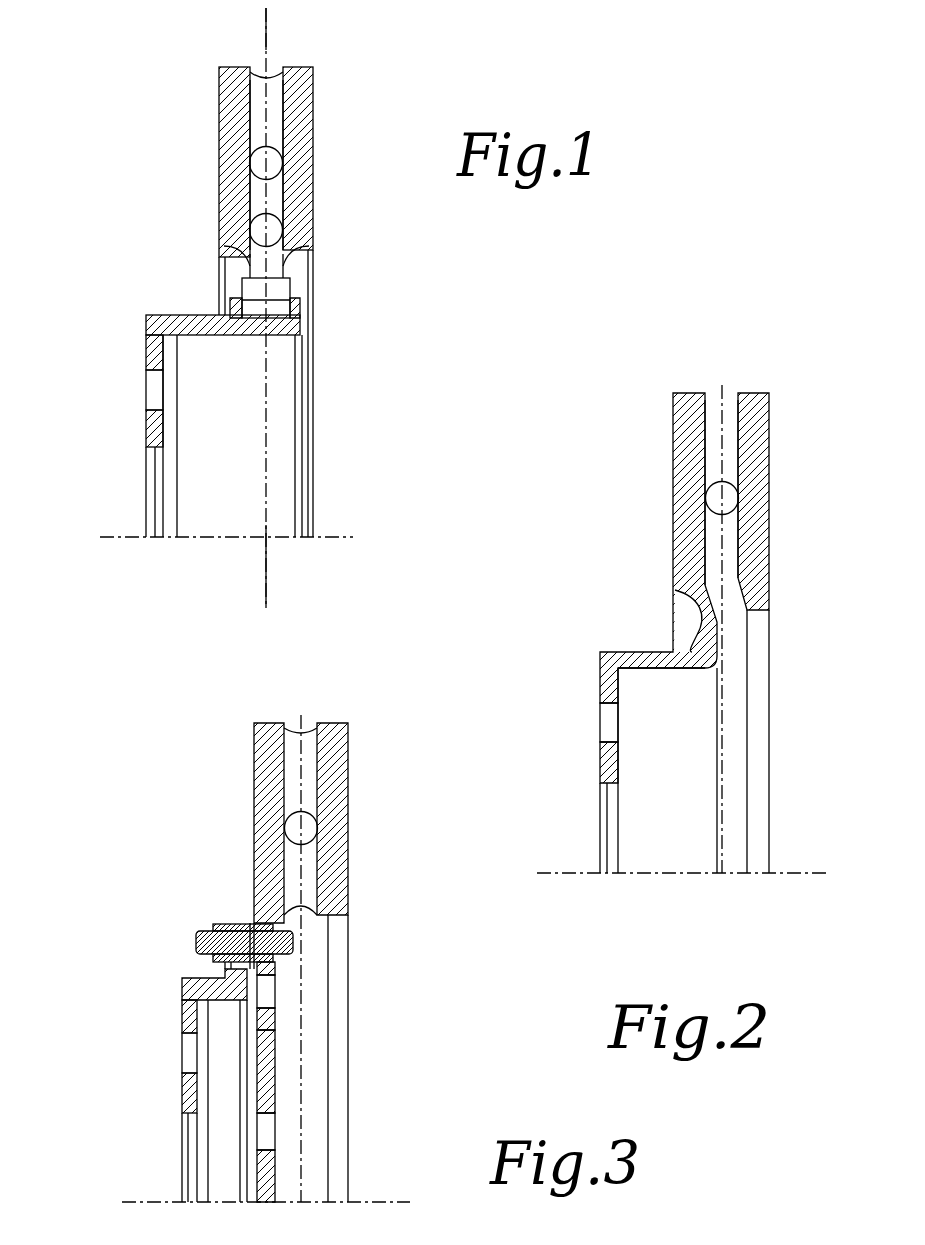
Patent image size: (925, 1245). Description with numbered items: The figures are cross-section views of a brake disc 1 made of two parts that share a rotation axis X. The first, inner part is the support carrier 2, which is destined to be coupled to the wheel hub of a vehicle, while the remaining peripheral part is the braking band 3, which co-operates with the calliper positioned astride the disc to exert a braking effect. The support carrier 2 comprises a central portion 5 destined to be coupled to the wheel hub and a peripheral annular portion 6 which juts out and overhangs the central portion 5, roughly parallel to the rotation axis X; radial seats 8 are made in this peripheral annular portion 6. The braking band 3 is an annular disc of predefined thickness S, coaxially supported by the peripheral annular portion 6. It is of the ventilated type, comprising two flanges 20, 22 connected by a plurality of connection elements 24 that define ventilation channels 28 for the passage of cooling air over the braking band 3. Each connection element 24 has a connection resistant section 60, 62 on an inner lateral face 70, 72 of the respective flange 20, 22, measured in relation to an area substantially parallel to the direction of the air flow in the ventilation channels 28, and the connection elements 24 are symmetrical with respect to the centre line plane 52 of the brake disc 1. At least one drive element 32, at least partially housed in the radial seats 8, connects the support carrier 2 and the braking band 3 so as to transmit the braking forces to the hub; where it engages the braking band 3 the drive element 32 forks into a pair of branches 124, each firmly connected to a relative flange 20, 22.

In FIG. 1, the brake disc 1 is at (340, 62).
In FIG. 1, the support carrier 2 is at (146, 326).
In FIG. 2, the support carrier 2 is at (600, 690).
In FIG. 3, the support carrier 2 is at (163, 1010).
In FIG. 1, the braking band 3 is at (200, 137).
In FIG. 1, the central portion 5 is at (140, 428).
In FIG. 1, the peripheral annular portion 6 is at (200, 330).
In FIG. 1, the radial seats 8 is at (272, 338).
In FIG. 1, the flange 20 is at (258, 283).
In FIG. 2, the flange 20 is at (674, 581).
In FIG. 3, the flange 20 is at (300, 929).
In FIG. 1, the flange 22 is at (219, 80).
In FIG. 2, the flange 22 is at (685, 420).
In FIG. 3, the flange 22 is at (262, 745).
In FIG. 1, the connection elements 24 is at (262, 76).
In FIG. 1, the ventilation channels 28 is at (280, 232).
In FIG. 2, the ventilation channels 28 is at (728, 465).
In FIG. 1, the drive element 32 is at (296, 302).
In FIG. 3, the drive element 32 is at (242, 928).
In FIG. 1, the centre line plane 52 is at (268, 45).
In FIG. 2, the connection resistant section 60 is at (752, 580).
In FIG. 2, the connection resistant section 62 is at (705, 592).
In FIG. 1, the inner lateral face 70 is at (278, 172).
In FIG. 2, the inner lateral face 70 is at (736, 504).
In FIG. 1, the inner lateral face 72 is at (250, 170).
In FIG. 2, the inner lateral face 72 is at (715, 528).
In FIG. 1, the branches 124 is at (232, 252).
In FIG. 1, the thickness S is at (195, 197).
In FIG. 1, the rotation axis X is at (110, 540).
In FIG. 3, the rotation axis X is at (135, 1205).